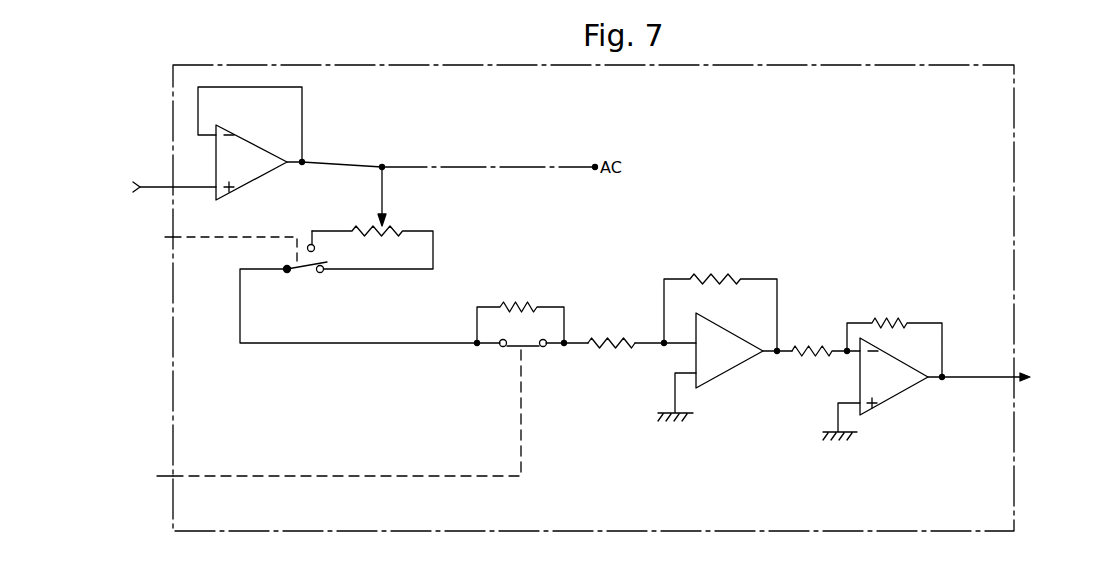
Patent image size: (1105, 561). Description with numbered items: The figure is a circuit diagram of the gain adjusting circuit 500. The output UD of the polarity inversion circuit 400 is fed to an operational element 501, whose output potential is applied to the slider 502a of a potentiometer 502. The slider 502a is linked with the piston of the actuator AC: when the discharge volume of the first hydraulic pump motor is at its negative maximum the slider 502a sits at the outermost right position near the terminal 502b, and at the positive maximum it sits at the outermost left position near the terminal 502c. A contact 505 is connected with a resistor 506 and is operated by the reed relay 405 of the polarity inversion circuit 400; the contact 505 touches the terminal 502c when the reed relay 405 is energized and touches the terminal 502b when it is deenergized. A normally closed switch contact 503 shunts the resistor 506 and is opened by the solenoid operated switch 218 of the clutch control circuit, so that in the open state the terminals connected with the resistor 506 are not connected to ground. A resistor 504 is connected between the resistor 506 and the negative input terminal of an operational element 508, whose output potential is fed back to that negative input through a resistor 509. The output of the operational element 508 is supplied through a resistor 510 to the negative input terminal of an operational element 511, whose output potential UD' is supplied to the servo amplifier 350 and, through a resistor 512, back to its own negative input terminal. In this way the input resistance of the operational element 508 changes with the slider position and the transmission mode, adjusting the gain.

The gain adjusting circuit 500 is at (170, 348).
The polarity inversion circuit 400 is at (129, 183).
The operational element 501 is at (253, 145).
The potentiometer 502 is at (365, 236).
The slider 502a is at (384, 187).
The terminal 502b is at (322, 274).
The terminal 502c is at (309, 244).
The contact 505 is at (294, 273).
The reed relay 405 is at (157, 232).
The resistor 506 is at (514, 300).
The normally closed switch contact 503 is at (532, 350).
The solenoid operated switch 218 is at (148, 471).
The resistor 504 is at (617, 335).
The resistor 509 is at (723, 278).
The operational element 508 is at (735, 365).
The resistor 510 is at (818, 358).
The resistor 512 is at (884, 320).
The operational element 511 is at (903, 391).
The servo amplifier 350 is at (1012, 372).